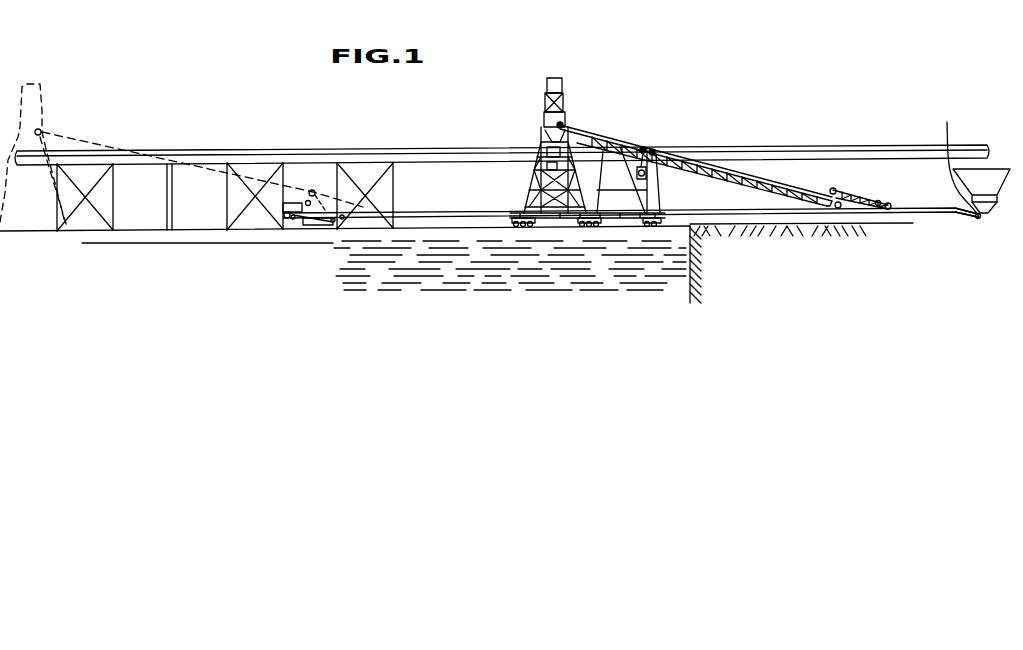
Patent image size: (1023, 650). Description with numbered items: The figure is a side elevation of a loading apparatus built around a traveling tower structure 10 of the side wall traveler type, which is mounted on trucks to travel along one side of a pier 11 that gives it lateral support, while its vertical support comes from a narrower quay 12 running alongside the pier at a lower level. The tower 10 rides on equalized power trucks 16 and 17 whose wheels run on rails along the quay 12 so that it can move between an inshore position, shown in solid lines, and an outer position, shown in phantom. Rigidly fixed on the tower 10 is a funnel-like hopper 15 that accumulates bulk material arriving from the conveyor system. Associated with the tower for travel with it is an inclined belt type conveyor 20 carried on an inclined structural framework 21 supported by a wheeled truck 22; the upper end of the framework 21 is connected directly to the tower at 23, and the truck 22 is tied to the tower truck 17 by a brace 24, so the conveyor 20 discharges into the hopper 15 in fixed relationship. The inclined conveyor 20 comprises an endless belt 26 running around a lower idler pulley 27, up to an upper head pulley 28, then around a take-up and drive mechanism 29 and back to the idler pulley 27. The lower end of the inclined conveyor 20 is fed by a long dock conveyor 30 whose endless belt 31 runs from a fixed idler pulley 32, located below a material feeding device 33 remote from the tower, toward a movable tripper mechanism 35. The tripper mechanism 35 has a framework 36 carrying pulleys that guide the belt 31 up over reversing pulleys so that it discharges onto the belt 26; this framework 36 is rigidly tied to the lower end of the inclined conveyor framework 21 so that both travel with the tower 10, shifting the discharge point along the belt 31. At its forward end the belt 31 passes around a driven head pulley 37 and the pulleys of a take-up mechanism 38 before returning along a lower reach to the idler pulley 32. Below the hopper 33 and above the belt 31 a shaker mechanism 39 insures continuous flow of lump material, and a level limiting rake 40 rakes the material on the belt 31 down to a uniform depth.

The traveling tower structure 10 is at (50, 108).
The pier 11 is at (850, 143).
The quay 12 is at (213, 243).
The hopper 15 is at (553, 132).
The power truck 16 is at (507, 225).
The power truck 17 is at (573, 225).
The inclined belt type conveyor 20 is at (100, 143).
The inclined structural framework 21 is at (670, 176).
The wheeled truck 22 is at (647, 222).
The connection point 23 is at (573, 143).
The brace 24 is at (623, 225).
The endless belt 26 is at (750, 178).
The lower idler pulley 27 is at (832, 196).
The upper head pulley 28 is at (561, 124).
The take-up and drive mechanism 29 is at (641, 173).
The dock conveyor 30 is at (468, 203).
The endless belt 31 is at (922, 212).
The fixed idler pulley 32 is at (980, 217).
The material feeding device 33 is at (993, 167).
The tripper mechanism 35 is at (322, 193).
The framework 36 is at (845, 210).
The driven head pulley 37 is at (292, 228).
The take-up mechanism 38 is at (322, 240).
The shaker mechanism 39 is at (993, 207).
The level limiting rake 40 is at (947, 159).